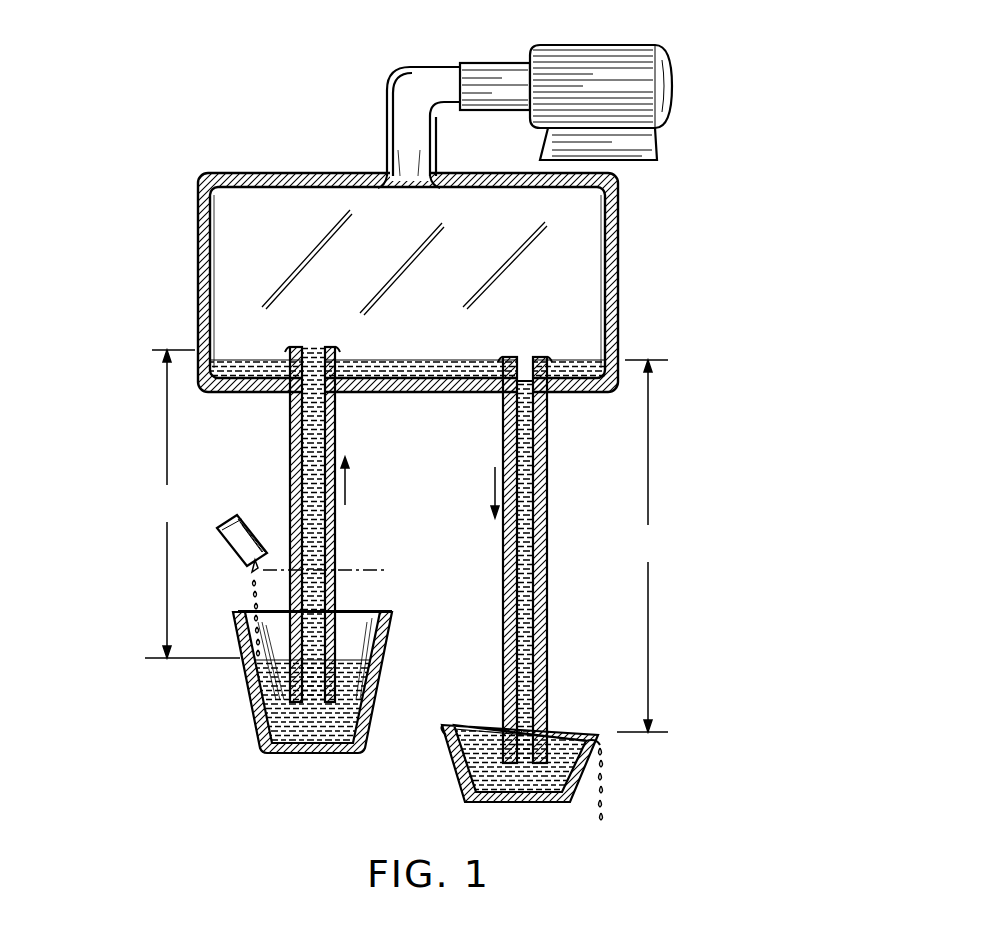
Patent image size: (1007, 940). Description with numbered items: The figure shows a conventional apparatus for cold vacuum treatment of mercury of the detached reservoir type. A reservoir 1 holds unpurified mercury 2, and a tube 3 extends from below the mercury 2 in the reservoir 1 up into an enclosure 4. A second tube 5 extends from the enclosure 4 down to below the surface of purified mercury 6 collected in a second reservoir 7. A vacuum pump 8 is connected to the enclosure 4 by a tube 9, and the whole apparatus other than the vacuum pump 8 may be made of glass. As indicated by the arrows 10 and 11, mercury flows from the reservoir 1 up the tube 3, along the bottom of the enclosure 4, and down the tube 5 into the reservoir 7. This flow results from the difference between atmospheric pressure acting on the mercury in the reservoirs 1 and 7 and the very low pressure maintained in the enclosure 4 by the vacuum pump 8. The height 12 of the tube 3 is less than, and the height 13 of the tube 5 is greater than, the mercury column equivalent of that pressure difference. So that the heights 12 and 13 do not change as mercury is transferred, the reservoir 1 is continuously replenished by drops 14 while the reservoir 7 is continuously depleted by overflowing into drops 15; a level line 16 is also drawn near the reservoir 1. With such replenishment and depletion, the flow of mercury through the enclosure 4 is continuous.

The reservoir 1 is at (258, 712).
The unpurified mercury 2 is at (311, 727).
The tube 3 is at (291, 433).
The enclosure 4 is at (197, 258).
The tube 5 is at (547, 449).
The purified mercury 6 is at (556, 738).
The reservoir 7 is at (525, 801).
The vacuum pump 8 is at (602, 48).
The tube 9 is at (402, 72).
The arrow 10 is at (350, 488).
The arrow 11 is at (493, 487).
The height of tube 3 12 is at (192, 504).
The height of tube 5 13 is at (642, 546).
The drops 14 is at (247, 584).
The drops 15 is at (604, 792).
The liquid level line 16 is at (395, 564).